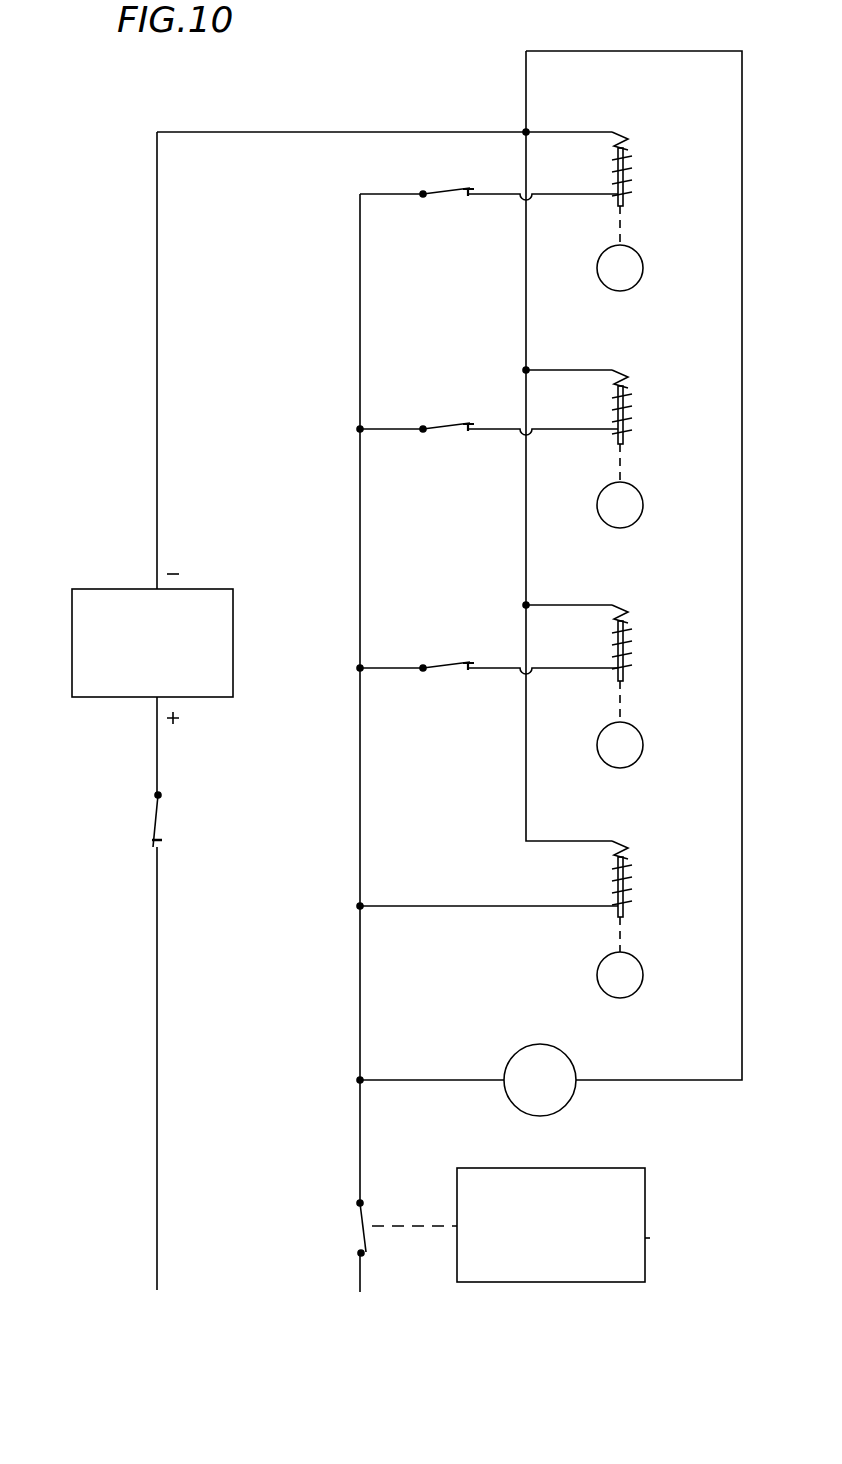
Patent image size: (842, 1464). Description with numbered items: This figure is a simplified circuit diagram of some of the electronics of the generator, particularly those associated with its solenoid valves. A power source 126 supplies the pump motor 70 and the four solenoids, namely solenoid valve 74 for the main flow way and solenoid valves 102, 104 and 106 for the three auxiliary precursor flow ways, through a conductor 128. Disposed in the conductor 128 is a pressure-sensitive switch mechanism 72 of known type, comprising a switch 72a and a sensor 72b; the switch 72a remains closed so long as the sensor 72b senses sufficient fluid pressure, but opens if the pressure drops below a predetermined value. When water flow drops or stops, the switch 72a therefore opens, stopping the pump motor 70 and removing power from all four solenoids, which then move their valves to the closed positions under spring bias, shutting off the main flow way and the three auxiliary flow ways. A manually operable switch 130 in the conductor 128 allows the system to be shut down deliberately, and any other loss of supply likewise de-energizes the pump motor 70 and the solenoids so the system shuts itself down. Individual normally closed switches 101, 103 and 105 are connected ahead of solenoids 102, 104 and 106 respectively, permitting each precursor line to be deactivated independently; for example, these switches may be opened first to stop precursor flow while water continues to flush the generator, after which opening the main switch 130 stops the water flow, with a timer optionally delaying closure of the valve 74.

The pump motor 70 is at (510, 1062).
The pressure-sensitive switch mechanism 72 is at (437, 1215).
The switch 72a is at (362, 1233).
The sensor 72b is at (650, 1238).
The solenoid valve 74 is at (660, 928).
The switch 101 is at (443, 188).
The solenoid valve 102 is at (650, 242).
The switch 103 is at (447, 425).
The solenoid valve 104 is at (650, 456).
The switch 105 is at (455, 665).
The solenoid valve 106 is at (659, 655).
The power source 126 is at (98, 589).
The conductor 128 is at (158, 1018).
The manually operable switch 130 is at (155, 812).